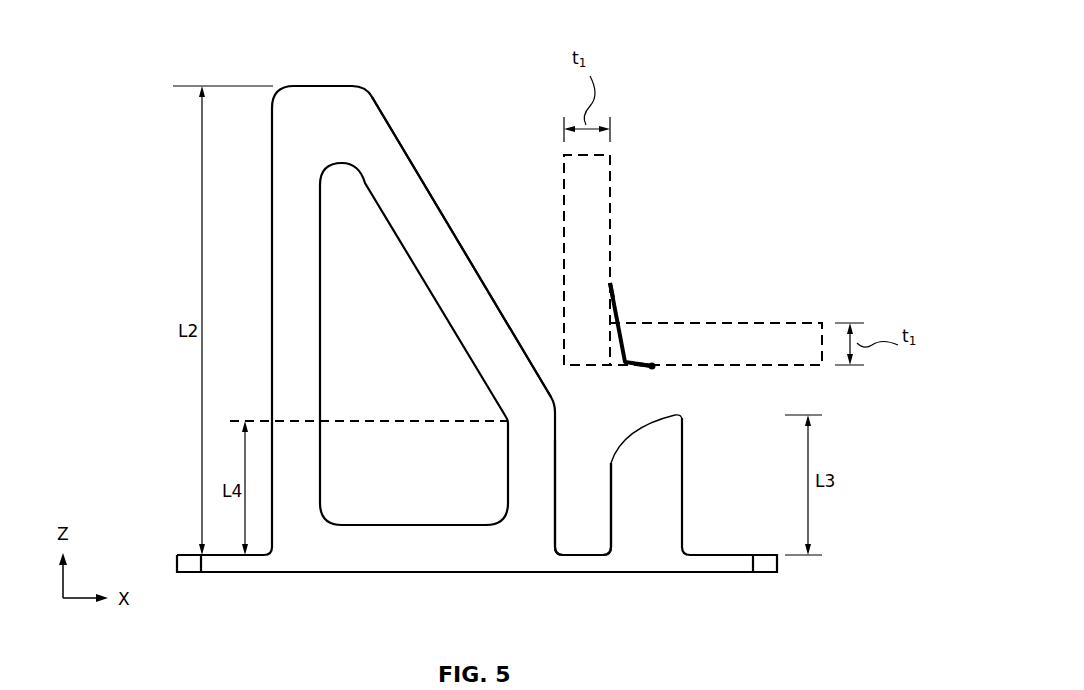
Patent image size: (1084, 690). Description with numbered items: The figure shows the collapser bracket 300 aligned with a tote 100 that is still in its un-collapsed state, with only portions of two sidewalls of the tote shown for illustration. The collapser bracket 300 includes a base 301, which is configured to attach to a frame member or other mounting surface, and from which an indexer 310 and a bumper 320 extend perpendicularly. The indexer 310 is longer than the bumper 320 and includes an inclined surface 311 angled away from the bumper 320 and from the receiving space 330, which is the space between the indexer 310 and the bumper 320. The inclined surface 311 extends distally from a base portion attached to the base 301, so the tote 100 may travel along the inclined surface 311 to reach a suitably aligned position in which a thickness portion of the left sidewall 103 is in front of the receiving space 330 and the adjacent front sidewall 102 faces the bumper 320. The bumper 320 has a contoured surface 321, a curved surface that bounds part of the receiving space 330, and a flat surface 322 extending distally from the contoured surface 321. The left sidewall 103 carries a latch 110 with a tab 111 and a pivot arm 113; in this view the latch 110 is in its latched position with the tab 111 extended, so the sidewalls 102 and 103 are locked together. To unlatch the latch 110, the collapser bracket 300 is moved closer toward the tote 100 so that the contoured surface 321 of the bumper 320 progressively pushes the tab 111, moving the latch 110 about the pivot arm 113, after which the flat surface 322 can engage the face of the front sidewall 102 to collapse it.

The collapser bracket 300 is at (226, 60).
The base 301 is at (277, 572).
The indexer 310 is at (383, 78).
The inclined surface 311 is at (432, 190).
The bumper 320 is at (697, 470).
The contoured surface 321 is at (624, 438).
The flat surface 322 is at (678, 413).
The receiving space 330 is at (595, 508).
The tote 100 is at (785, 207).
The front sidewall 102 is at (806, 321).
The left sidewall 103 is at (613, 168).
The latch 110 is at (631, 306).
The tab 111 is at (648, 362).
The pivot arm 113 is at (613, 290).